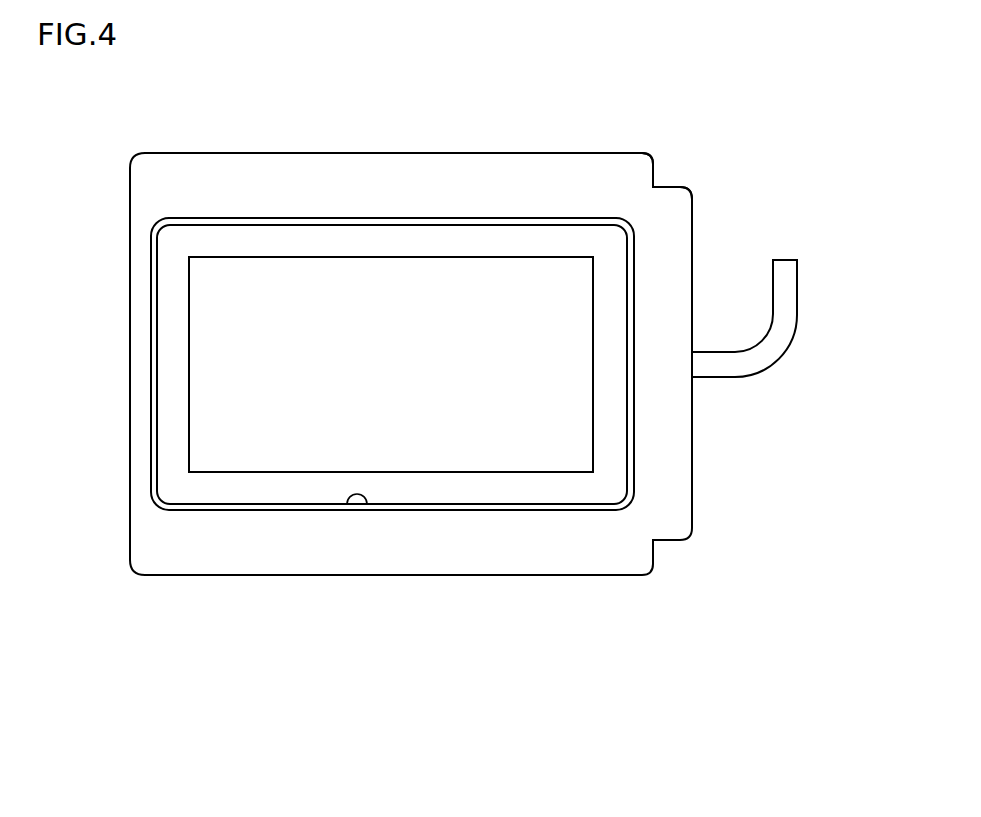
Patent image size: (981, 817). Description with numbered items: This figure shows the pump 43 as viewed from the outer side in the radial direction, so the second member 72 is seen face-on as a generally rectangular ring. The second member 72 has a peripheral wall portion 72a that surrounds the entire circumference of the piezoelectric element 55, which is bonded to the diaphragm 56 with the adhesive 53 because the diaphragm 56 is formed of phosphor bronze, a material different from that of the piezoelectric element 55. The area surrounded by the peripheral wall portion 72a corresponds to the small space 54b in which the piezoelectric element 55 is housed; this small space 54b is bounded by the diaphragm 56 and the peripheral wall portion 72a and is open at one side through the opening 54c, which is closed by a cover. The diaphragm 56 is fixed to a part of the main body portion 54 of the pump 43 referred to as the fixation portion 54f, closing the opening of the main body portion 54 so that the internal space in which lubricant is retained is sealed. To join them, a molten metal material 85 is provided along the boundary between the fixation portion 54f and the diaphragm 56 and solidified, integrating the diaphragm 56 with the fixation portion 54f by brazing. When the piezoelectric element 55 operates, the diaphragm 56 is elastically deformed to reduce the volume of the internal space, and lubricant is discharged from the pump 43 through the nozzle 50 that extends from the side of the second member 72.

The pump 43 is at (607, 153).
The nozzle 50 is at (768, 360).
The adhesive 53 is at (513, 285).
The main body portion 54 is at (130, 480).
The small space 54b is at (297, 488).
The opening 54c is at (368, 500).
The fixation portion 54f is at (248, 250).
The piezoelectric element 55 is at (322, 258).
The diaphragm 56 is at (612, 278).
The second member 72 is at (558, 576).
The peripheral wall portion 72a is at (675, 470).
The metal material 85 is at (431, 218).